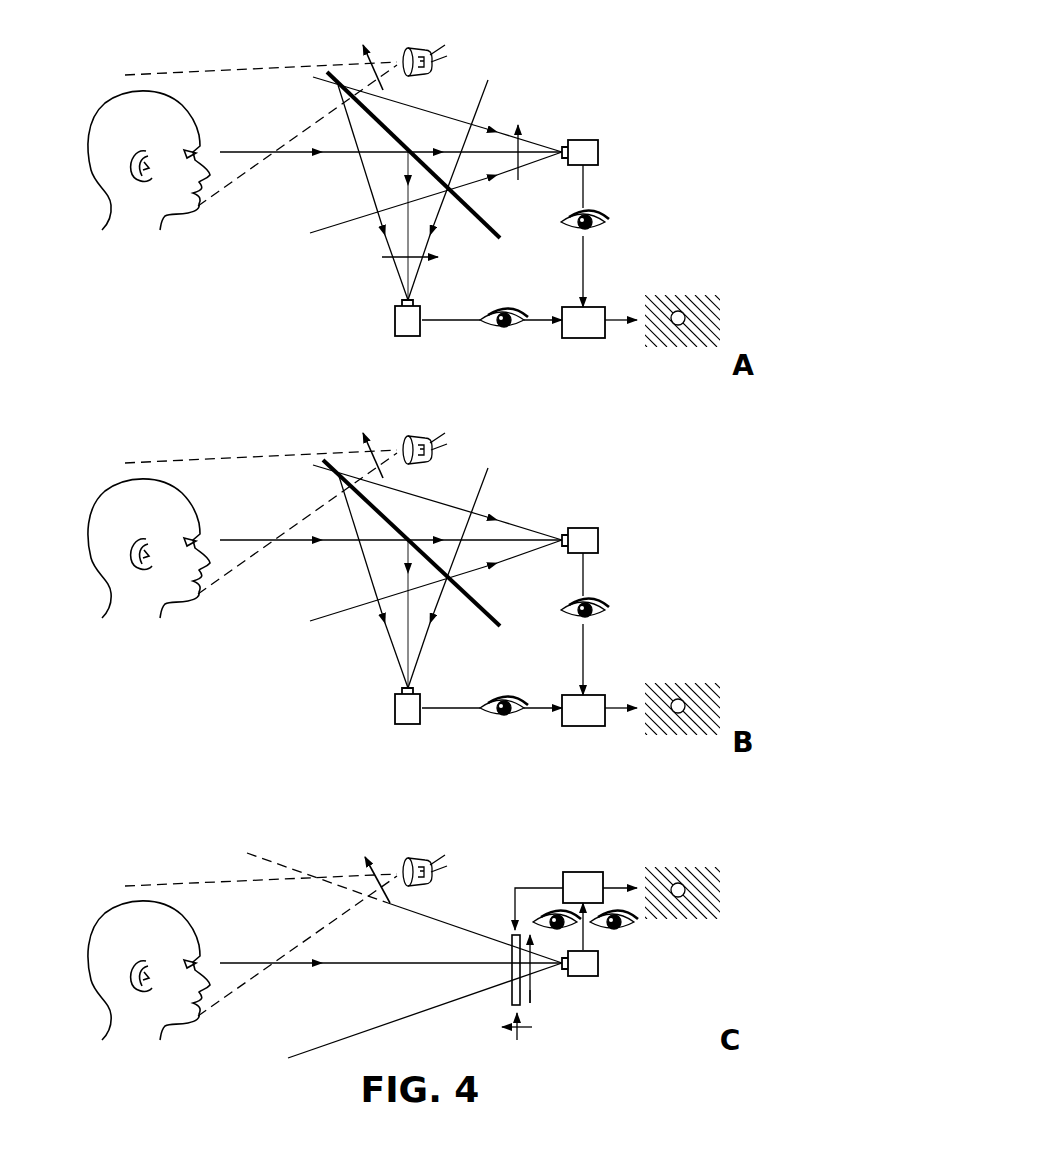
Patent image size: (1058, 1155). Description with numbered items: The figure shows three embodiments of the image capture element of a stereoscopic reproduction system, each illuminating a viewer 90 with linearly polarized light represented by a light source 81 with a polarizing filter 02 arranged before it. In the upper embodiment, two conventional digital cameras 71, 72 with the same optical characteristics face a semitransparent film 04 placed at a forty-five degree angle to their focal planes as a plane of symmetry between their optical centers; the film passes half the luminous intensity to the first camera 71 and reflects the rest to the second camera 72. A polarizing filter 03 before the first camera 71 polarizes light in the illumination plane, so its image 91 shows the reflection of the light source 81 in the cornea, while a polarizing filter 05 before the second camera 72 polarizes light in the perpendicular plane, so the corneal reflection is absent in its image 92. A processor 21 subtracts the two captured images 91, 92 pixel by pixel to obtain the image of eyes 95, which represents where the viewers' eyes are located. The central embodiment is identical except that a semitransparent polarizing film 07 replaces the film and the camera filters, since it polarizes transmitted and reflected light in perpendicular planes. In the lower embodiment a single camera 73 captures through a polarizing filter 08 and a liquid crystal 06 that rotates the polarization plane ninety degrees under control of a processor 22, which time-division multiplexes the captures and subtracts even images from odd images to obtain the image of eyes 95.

The viewer 90 is at (150, 98).
The polarizing filter 02 is at (370, 60).
The light source 81 is at (440, 52).
The polarizing filter 03 is at (520, 125).
The first camera 71 is at (583, 146).
The semitransparent film 04 is at (497, 232).
The image with corneal reflection 91 is at (607, 217).
The polarizing filter 05 is at (382, 257).
The image of eyes 95 is at (677, 311).
The second camera 72 is at (394, 322).
The image without corneal reflection 92 is at (500, 333).
The processor 21 is at (583, 333).
The semitransparent polarizing film 07 is at (478, 603).
The processor 22 is at (585, 878).
The polarizing filter 08 is at (532, 985).
The camera 73 is at (585, 972).
The liquid crystal 06 is at (520, 1000).